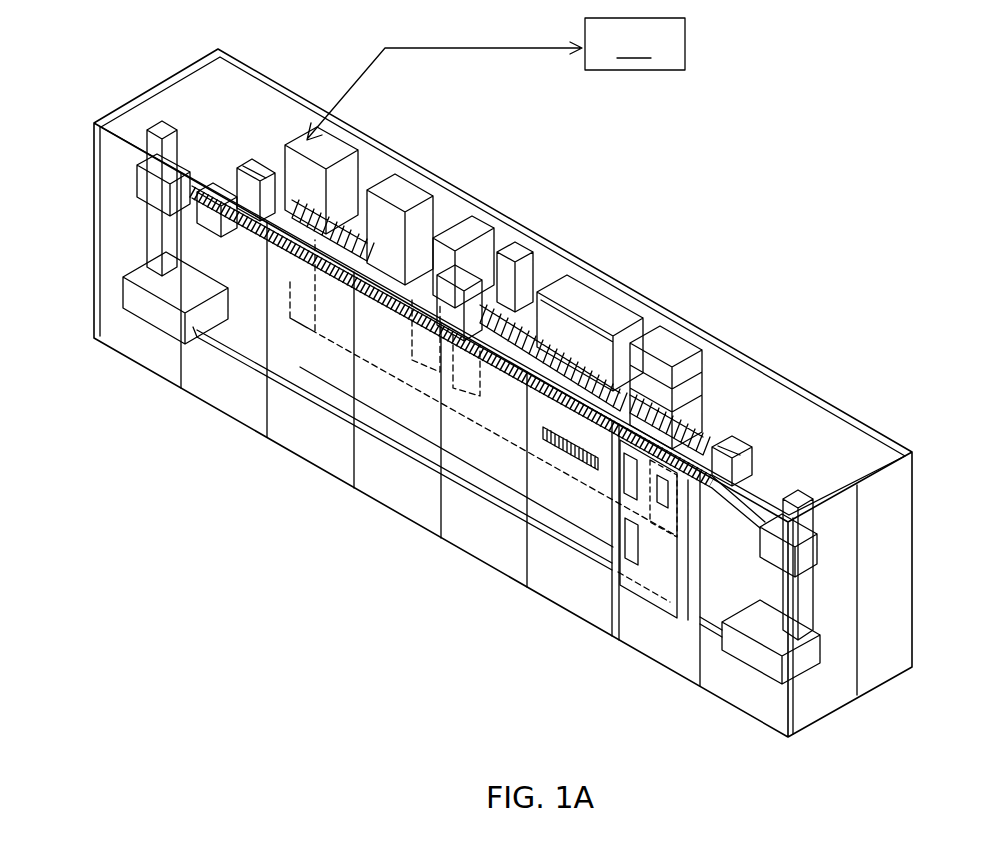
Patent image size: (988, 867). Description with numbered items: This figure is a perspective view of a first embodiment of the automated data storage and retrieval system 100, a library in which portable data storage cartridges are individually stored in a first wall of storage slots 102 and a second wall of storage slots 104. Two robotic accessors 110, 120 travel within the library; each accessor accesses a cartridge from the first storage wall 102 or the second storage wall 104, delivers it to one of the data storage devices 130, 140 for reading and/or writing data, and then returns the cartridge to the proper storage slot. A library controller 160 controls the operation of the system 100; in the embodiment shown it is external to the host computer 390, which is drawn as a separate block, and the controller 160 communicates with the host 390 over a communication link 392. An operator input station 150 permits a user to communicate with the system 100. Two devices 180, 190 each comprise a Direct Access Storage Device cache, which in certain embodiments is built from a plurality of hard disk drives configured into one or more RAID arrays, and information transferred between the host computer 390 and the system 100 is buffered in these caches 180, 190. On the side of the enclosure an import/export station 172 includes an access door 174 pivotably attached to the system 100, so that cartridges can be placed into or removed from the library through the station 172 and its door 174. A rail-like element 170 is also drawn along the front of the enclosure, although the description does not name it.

The automated data storage and retrieval system 100 is at (551, 662).
The first wall of storage slots 102 is at (370, 180).
The second wall of storage slots 104 is at (297, 355).
The accessor 110 is at (137, 184).
The accessor 120 is at (817, 550).
The data storage device 130 is at (483, 230).
The data storage device 140 is at (524, 252).
The operator input station 150 is at (427, 194).
The library controller 160 is at (352, 160).
The rail 170 is at (390, 440).
The import/export station 172 is at (668, 614).
The access door 174 is at (645, 605).
The DASD cache 180 is at (730, 440).
The DASD cache 190 is at (714, 495).
The host computer 390 is at (635, 44).
The communication link 392 is at (524, 52).